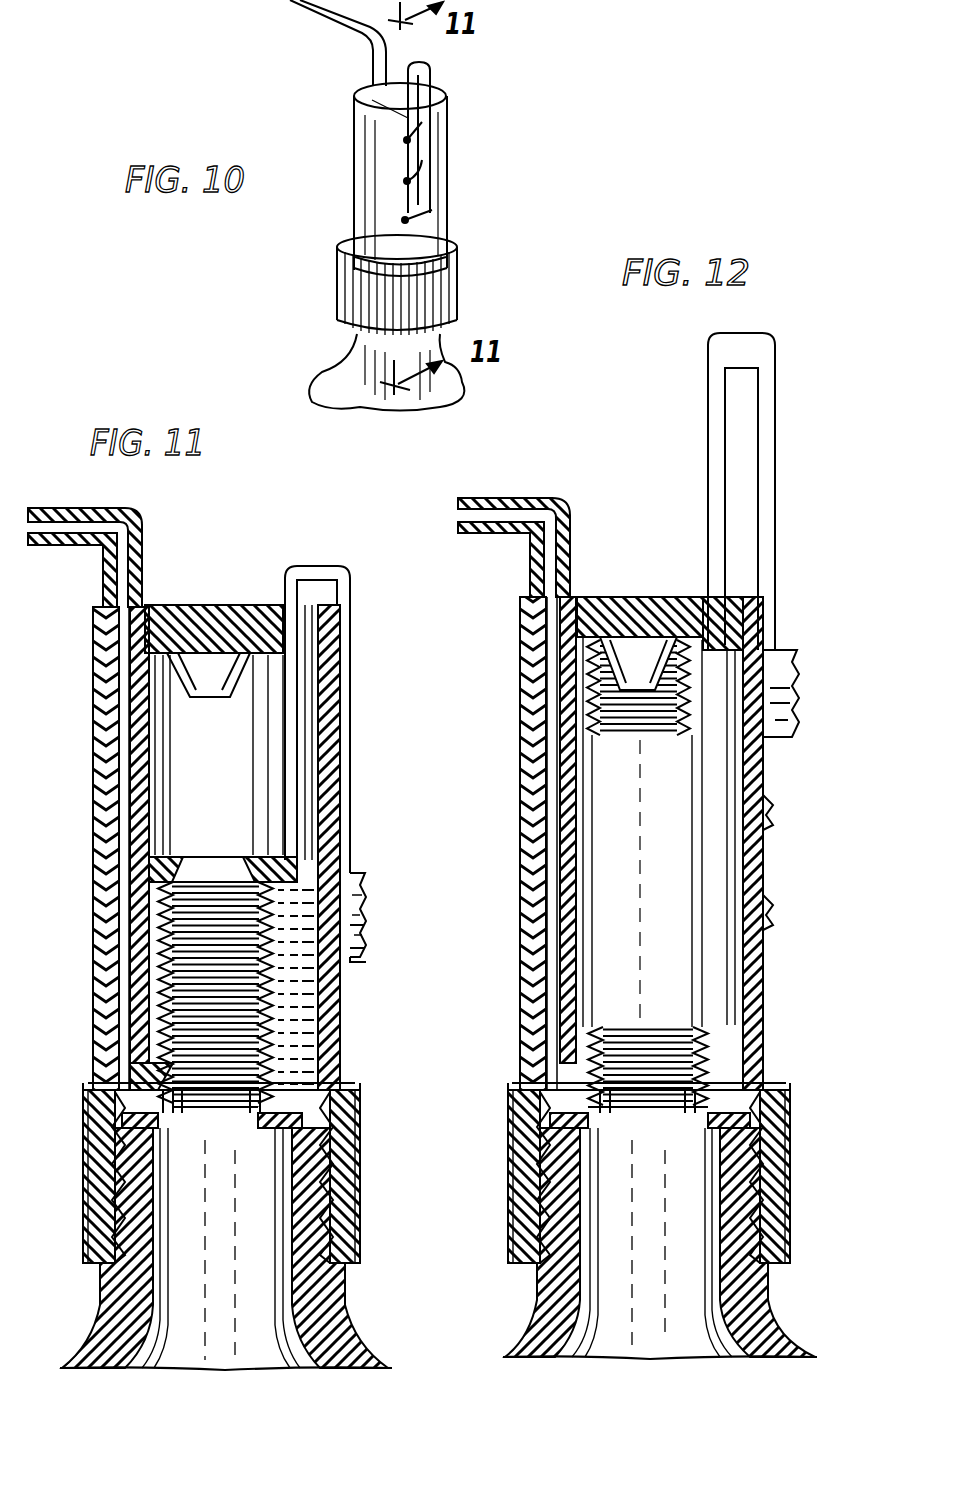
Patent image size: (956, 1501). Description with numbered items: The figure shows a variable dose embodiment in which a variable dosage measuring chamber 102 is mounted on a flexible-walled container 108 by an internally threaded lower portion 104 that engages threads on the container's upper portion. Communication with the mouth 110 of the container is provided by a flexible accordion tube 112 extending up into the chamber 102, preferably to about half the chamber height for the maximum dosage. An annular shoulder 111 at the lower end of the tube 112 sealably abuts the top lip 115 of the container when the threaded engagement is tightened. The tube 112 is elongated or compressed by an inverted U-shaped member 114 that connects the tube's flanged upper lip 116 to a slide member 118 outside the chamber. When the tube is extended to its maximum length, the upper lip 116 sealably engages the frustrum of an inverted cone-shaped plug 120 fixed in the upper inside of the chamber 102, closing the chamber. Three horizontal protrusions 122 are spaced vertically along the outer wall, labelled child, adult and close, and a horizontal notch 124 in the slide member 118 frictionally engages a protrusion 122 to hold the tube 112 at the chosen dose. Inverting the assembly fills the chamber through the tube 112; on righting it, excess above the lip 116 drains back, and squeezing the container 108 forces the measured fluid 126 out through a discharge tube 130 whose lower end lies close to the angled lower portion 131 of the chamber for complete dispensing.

In FIG. 10, the variable dosage measuring chamber 102 is at (352, 212).
In FIG. 11, the variable dosage measuring chamber 102 is at (93, 877).
In FIG. 12, the variable dosage measuring chamber 102 is at (520, 792).
In FIG. 10, the internally threaded lower portion 104 is at (452, 295).
In FIG. 11, the internally threaded lower portion 104 is at (347, 1186).
In FIG. 12, the internally threaded lower portion 104 is at (775, 1196).
In FIG. 10, the flexible-walled container 108 is at (386, 372).
In FIG. 11, the flexible-walled container 108 is at (332, 1337).
In FIG. 12, the flexible-walled container 108 is at (760, 1307).
In FIG. 11, the mouth 110 is at (100, 1147).
In FIG. 12, the mouth 110 is at (522, 1176).
In FIG. 11, the annular shoulder 111 is at (300, 1108).
In FIG. 12, the annular shoulder 111 is at (768, 1093).
In FIG. 11, the flexible accordion tube 112 is at (158, 948).
In FIG. 12, the flexible accordion tube 112 is at (700, 1058).
In FIG. 10, the inverted U-shaped member 114 is at (436, 70).
In FIG. 11, the inverted U-shaped member 114 is at (342, 573).
In FIG. 12, the inverted U-shaped member 114 is at (710, 418).
In FIG. 11, the top lip 115 is at (320, 1123).
In FIG. 12, the top lip 115 is at (752, 1124).
In FIG. 11, the upper lip 116 is at (262, 860).
In FIG. 12, the upper lip 116 is at (693, 597).
In FIG. 11, the slide member 118 is at (368, 961).
In FIG. 12, the slide member 118 is at (788, 738).
In FIG. 11, the inverted cone-shaped plug 120 is at (218, 605).
In FIG. 12, the inverted cone-shaped plug 120 is at (622, 597).
In FIG. 10, the horizontal protrusions 122 is at (418, 136).
In FIG. 11, the horizontal protrusions 122 is at (330, 713).
In FIG. 12, the horizontal protrusions 122 is at (772, 812).
In FIG. 11, the horizontal notch 124 is at (364, 935).
In FIG. 12, the horizontal notch 124 is at (770, 652).
In FIG. 11, the fluid 126 is at (318, 993).
In FIG. 10, the discharge tube 130 is at (328, 28).
In FIG. 11, the discharge tube 130 is at (95, 508).
In FIG. 12, the discharge tube 130 is at (520, 498).
In FIG. 11, the lower portion 131 is at (305, 1080).